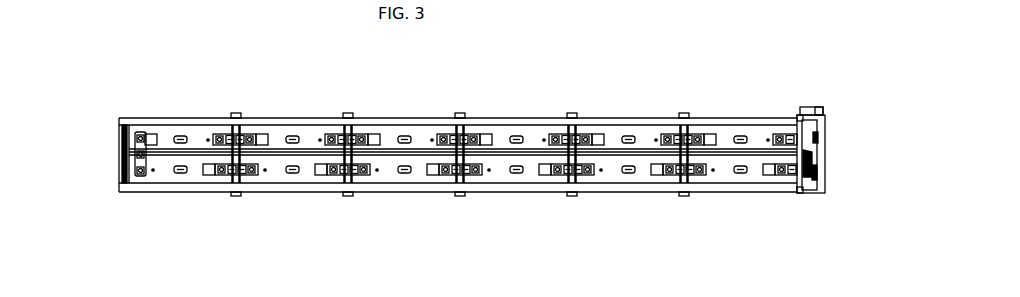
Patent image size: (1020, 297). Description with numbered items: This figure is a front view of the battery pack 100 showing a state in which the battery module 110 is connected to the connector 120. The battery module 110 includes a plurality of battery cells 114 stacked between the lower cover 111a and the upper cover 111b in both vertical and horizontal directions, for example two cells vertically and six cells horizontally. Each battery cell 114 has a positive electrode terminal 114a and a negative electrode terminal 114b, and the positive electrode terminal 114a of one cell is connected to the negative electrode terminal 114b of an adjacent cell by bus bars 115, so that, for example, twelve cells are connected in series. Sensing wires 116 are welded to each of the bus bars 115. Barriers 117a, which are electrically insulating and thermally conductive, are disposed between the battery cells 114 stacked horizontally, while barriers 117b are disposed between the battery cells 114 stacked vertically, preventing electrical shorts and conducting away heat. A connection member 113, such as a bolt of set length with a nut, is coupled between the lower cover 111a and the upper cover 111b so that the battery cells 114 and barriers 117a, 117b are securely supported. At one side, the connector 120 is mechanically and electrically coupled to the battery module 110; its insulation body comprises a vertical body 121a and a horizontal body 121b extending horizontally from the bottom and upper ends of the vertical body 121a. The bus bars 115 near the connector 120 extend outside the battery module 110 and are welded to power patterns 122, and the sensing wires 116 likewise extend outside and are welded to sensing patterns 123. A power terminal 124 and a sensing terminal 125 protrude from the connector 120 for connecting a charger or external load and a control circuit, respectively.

The battery pack 100 is at (89, 79).
The battery module 110 is at (112, 162).
The lower cover 111a is at (140, 193).
The upper cover 111b is at (137, 116).
The connection member 113 is at (236, 114).
The battery cells 114 is at (296, 135).
The positive electrode terminal 114a is at (330, 135).
The negative electrode terminal 114b is at (251, 134).
The bus bars 115 is at (146, 151).
The sensing wires 116 is at (429, 150).
The barriers 117a is at (119, 132).
The barriers 117b is at (198, 152).
The connector 120 is at (834, 115).
The vertical body 121a is at (822, 150).
The horizontal body 121b is at (801, 108).
The power patterns 122 is at (818, 135).
The sensing patterns 123 is at (814, 185).
The power terminal 124 is at (813, 106).
The sensing terminal 125 is at (822, 106).